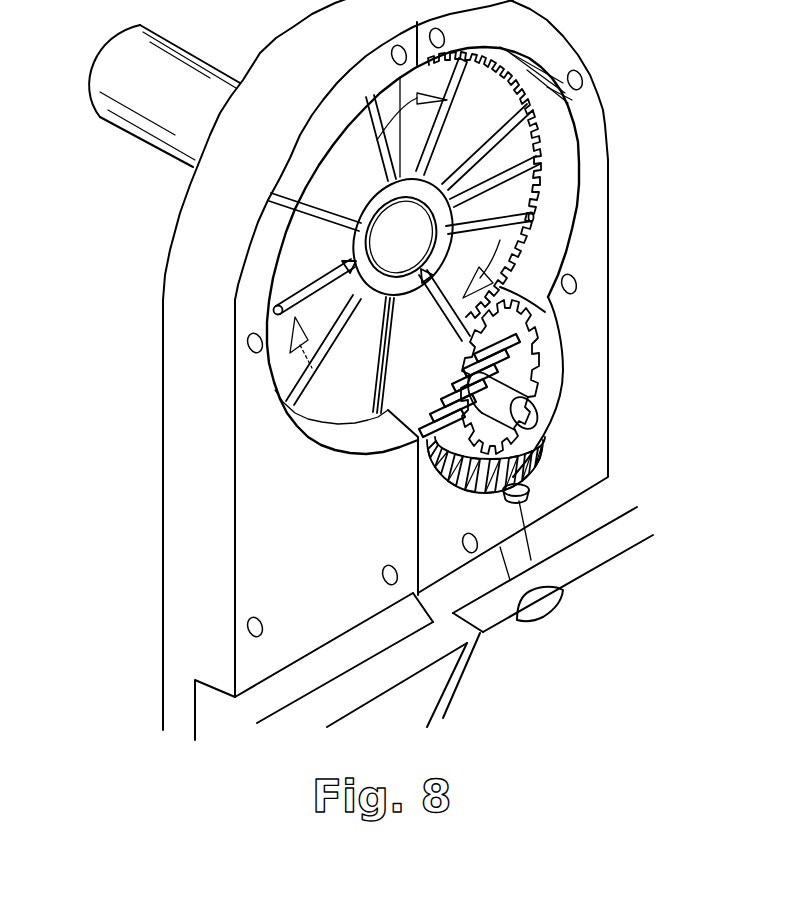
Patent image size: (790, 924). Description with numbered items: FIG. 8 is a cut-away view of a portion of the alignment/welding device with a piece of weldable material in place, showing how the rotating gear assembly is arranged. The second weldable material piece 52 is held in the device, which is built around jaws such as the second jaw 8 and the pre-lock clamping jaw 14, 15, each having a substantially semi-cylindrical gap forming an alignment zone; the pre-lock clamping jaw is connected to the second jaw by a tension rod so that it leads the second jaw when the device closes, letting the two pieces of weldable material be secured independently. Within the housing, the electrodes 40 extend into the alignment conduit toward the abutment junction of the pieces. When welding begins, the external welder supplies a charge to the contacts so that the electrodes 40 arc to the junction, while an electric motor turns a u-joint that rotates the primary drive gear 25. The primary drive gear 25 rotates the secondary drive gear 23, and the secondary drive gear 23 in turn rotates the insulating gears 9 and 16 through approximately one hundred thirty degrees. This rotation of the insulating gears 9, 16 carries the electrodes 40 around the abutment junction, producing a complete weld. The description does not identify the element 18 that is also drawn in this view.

The second jaw 8 is at (336, 536).
The insulating gear 9 is at (327, 254).
The pre-lock clamping jaw 14 is at (377, 677).
The pre-lock clamping jaw 15 is at (598, 424).
The insulating gear 16 is at (518, 193).
The support rail 18 is at (608, 540).
The secondary drive gear 23 is at (515, 367).
The primary drive gear 25 is at (482, 453).
The electrodes 40 is at (307, 297).
The second weldable material piece 52 is at (127, 133).